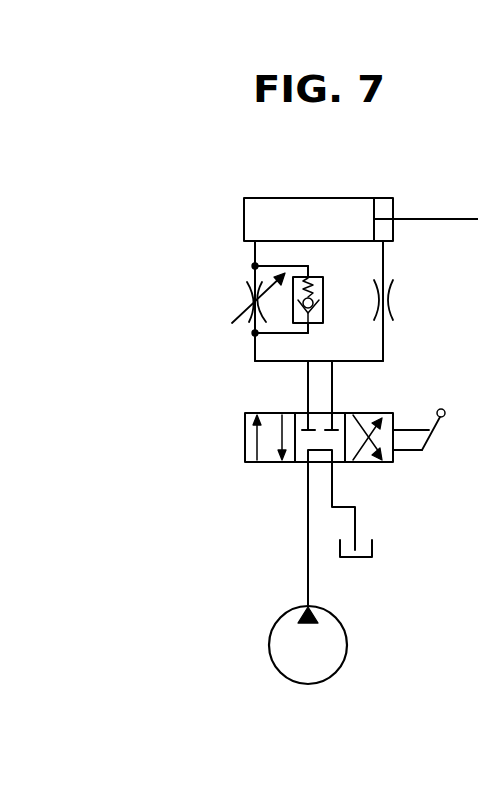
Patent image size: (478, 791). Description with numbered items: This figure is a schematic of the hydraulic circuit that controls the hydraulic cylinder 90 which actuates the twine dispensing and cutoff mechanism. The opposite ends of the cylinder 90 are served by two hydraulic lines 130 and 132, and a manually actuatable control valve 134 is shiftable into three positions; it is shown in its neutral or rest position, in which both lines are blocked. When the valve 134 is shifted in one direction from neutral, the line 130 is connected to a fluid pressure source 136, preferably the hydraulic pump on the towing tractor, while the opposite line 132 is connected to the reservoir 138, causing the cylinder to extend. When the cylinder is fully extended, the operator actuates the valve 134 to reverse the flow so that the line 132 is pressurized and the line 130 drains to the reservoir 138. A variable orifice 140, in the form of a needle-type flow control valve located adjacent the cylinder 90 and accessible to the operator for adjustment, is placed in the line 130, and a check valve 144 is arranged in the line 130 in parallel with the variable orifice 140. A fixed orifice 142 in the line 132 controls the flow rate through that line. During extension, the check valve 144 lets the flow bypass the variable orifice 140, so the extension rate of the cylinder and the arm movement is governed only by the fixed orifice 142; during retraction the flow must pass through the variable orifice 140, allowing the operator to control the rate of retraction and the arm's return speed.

The hydraulic cylinder 90 is at (305, 198).
The hydraulic line 130 is at (255, 257).
The hydraulic line 132 is at (386, 353).
The control valve 134 is at (373, 463).
The fluid pressure source 136 is at (270, 647).
The reservoir 138 is at (368, 547).
The variable orifice 140 is at (248, 294).
The fixed orifice 142 is at (374, 292).
The check valve 144 is at (324, 312).